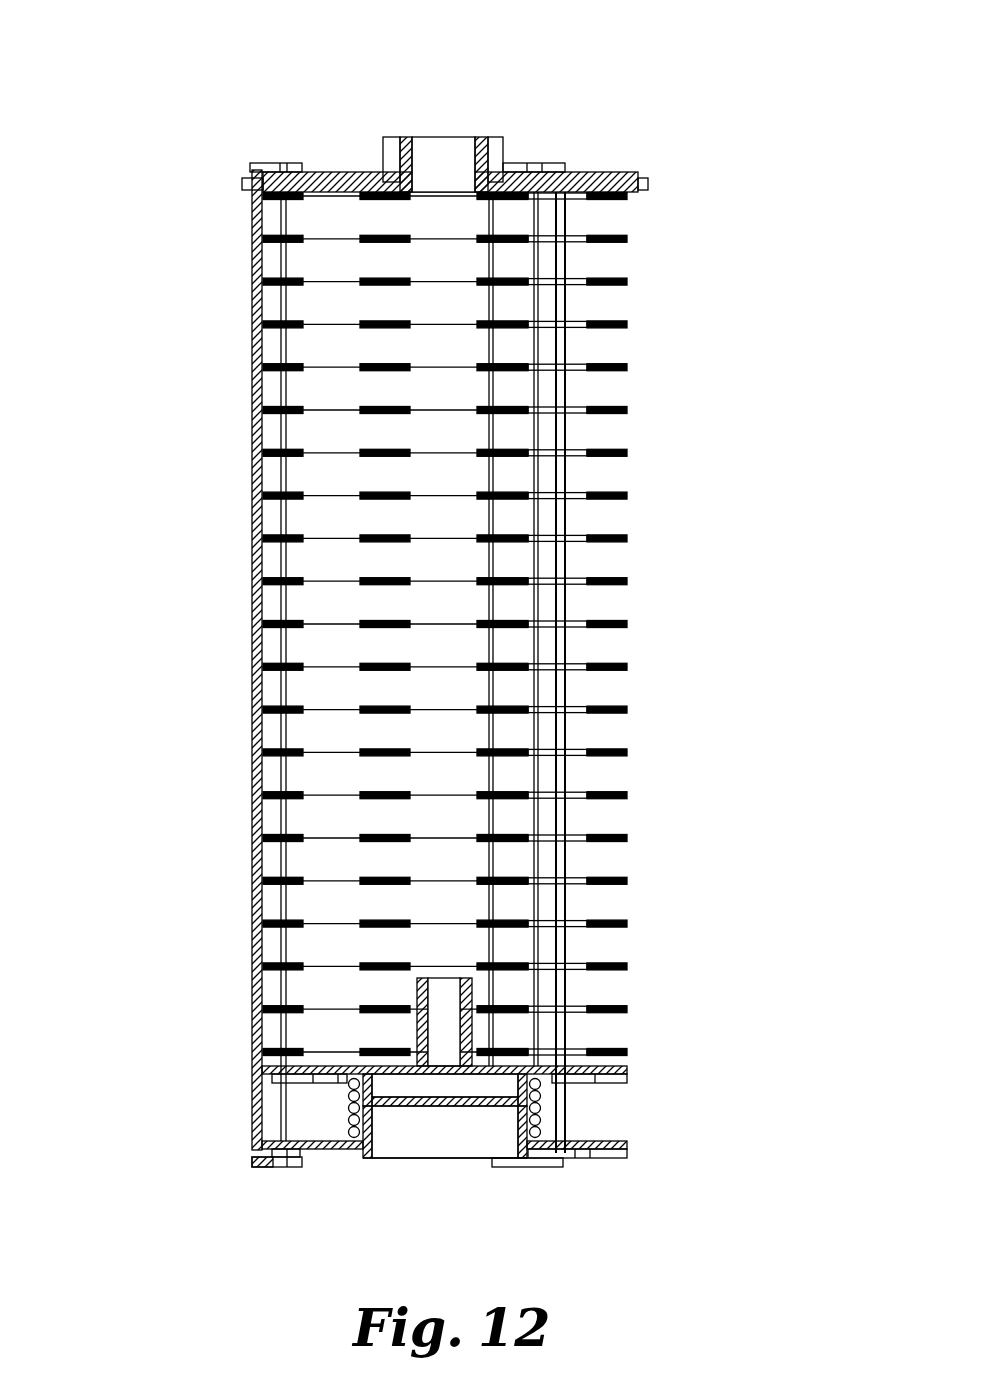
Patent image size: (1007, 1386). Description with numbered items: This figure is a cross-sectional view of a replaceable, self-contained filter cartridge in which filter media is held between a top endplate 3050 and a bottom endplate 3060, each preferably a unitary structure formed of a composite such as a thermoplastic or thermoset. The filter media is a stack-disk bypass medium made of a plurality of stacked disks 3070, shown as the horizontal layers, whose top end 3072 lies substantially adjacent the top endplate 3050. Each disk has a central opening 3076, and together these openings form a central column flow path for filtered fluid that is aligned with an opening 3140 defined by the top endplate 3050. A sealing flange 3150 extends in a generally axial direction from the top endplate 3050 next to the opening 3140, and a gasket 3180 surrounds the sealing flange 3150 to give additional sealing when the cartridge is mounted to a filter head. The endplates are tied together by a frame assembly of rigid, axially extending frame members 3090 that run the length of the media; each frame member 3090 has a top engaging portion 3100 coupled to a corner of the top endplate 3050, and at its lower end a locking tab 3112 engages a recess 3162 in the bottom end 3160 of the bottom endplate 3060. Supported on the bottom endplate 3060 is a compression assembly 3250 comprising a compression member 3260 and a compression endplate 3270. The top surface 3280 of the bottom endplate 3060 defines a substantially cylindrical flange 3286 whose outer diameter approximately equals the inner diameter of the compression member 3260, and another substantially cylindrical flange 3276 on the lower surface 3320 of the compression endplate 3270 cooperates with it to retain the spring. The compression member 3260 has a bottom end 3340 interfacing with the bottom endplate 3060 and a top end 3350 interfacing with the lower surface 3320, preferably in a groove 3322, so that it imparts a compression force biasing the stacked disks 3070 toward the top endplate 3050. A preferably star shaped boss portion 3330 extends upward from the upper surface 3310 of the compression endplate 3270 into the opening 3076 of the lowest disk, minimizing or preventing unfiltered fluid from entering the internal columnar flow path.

The top endplate 3050 is at (613, 170).
The top engaging portion 3100 is at (262, 163).
The opening 3140 is at (445, 150).
The sealing flange 3150 is at (403, 146).
The gasket 3180 is at (500, 152).
The frame member 3090 is at (257, 356).
The stacked disks 3070 is at (603, 406).
The opening 3076 is at (445, 198).
The top end 3072 is at (253, 212).
The boss portion 3330 is at (418, 1000).
The compression assembly 3250 is at (436, 1134).
The compression endplate 3270 is at (252, 1070).
The upper surface 3310 is at (300, 1066).
The substantially cylindrical flange 3276 is at (545, 1088).
The lower surface 3320 is at (547, 1087).
The groove 3322 is at (390, 1107).
The bottom end 3160 is at (346, 1165).
The substantially cylindrical flange 3286 is at (545, 1127).
The bottom end 3340 is at (362, 1158).
The compression member 3260 is at (345, 1113).
The top end 3350 is at (540, 1078).
The top surface 3280 is at (290, 1143).
The locking tab 3112 is at (290, 1165).
The bottom endplate 3060 is at (627, 1150).
The recess 3162 is at (594, 1167).